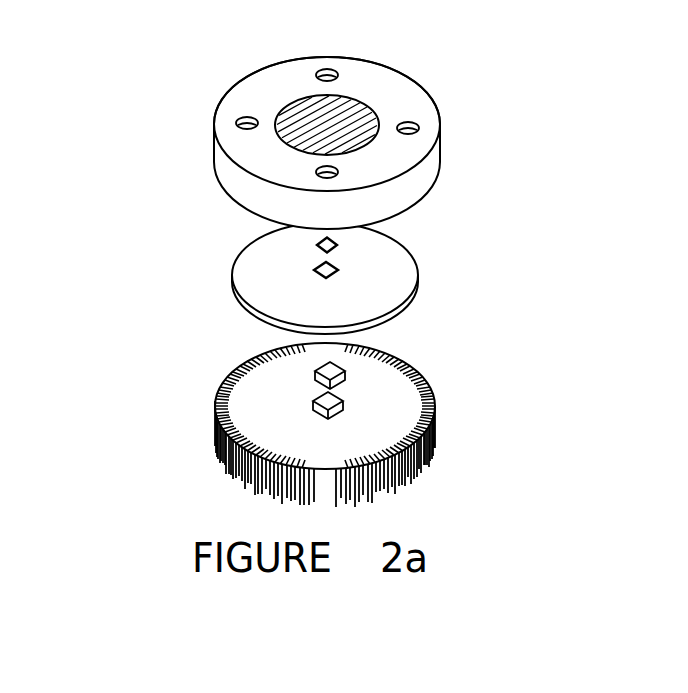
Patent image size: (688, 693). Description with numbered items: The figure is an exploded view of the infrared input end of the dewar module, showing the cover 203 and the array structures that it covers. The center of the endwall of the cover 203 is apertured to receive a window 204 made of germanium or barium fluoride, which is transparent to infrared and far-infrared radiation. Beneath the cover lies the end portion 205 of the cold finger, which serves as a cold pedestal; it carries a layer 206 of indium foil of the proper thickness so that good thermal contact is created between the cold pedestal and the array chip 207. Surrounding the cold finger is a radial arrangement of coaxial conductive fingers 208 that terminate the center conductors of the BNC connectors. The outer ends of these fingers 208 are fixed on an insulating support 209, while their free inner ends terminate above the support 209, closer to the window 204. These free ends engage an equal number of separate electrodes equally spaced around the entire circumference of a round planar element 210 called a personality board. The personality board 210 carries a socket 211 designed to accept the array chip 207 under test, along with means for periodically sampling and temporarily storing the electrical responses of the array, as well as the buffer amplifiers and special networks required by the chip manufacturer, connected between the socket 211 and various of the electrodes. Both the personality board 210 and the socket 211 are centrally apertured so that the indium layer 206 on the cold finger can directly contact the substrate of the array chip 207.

The cover 203 is at (285, 133).
The window 204 is at (337, 96).
The end portion of the cold finger 205 is at (314, 406).
The layer of indium foil 206 is at (316, 376).
The array chip 207 is at (338, 243).
The coaxial conductive fingers 208 is at (435, 403).
The insulating support 209 is at (437, 415).
The personality board 210 is at (383, 303).
The socket 211 is at (338, 270).